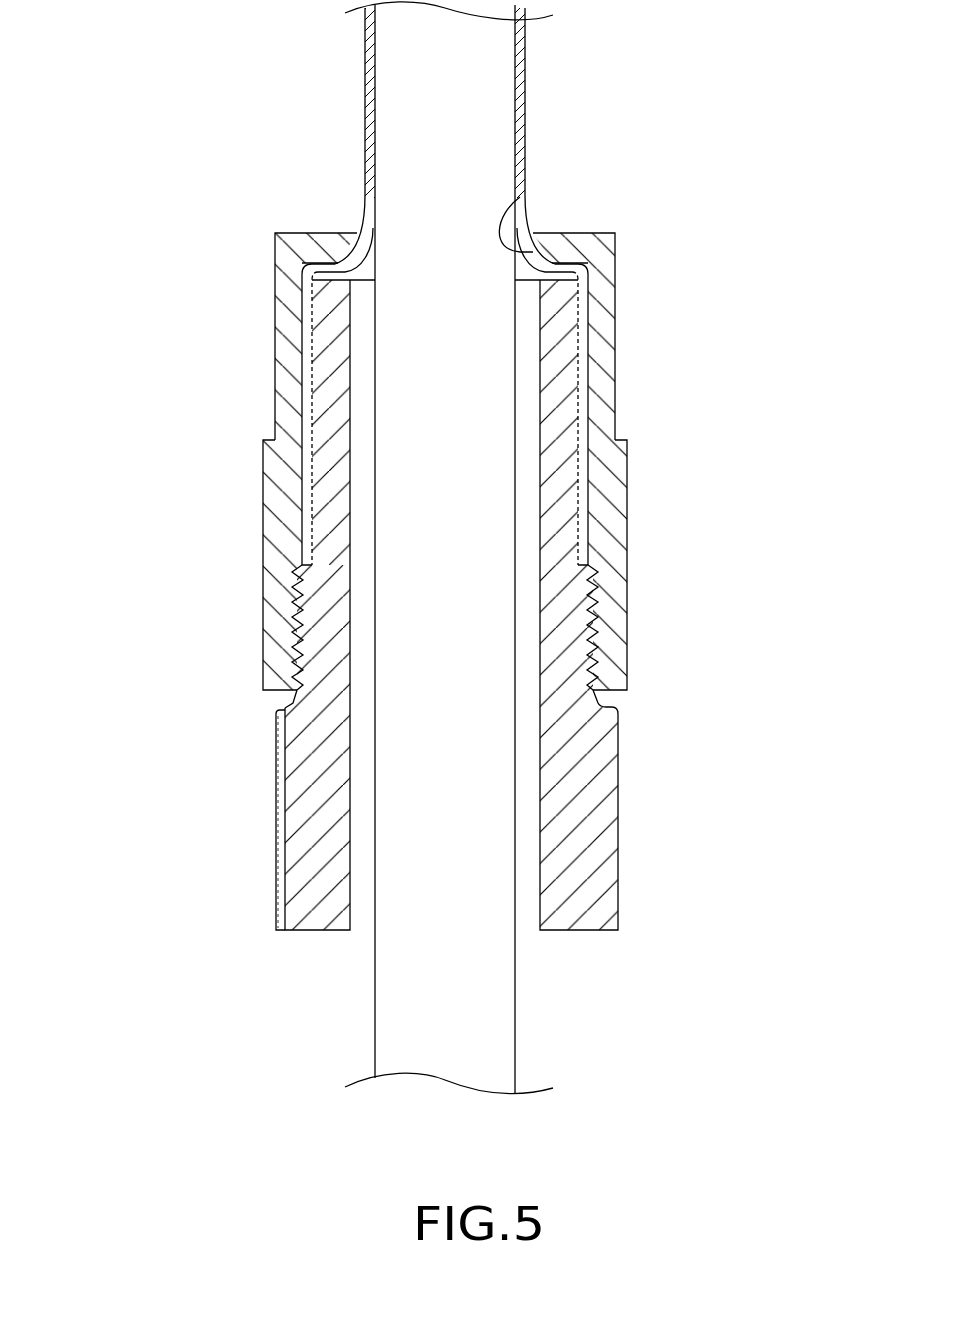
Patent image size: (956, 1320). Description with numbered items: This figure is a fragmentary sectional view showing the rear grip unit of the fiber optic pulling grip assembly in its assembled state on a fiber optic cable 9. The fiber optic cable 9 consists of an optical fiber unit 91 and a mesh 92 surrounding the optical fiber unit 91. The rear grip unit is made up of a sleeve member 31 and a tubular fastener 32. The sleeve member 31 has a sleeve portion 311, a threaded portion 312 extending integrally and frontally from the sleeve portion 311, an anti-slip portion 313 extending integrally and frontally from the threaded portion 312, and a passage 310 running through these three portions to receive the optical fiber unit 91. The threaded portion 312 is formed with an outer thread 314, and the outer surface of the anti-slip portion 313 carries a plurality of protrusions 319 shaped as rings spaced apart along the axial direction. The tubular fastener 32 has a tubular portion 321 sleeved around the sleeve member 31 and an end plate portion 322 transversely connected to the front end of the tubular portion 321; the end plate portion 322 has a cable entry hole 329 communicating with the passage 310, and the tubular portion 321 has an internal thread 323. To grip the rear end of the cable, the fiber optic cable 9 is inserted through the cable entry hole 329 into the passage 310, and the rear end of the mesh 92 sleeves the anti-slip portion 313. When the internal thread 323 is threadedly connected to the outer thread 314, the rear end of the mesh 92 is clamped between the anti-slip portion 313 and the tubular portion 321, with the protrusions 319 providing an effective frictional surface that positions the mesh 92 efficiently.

The fiber optic cable 9 is at (345, 91).
The optical fiber unit 91 is at (508, 1033).
The mesh 92 is at (592, 293).
The protrusions 319 is at (582, 370).
The cable entry hole 329 is at (520, 205).
The sleeve member 31 is at (428, 559).
The passage 310 is at (363, 855).
The sleeve portion 311 is at (600, 790).
The threaded portion 312 is at (580, 622).
The anti-slip portion 313 is at (570, 293).
The outer thread 314 is at (598, 655).
The tubular fastener 32 is at (444, 420).
The tubular portion 321 is at (623, 467).
The end plate portion 322 is at (318, 230).
The internal thread 323 is at (296, 618).